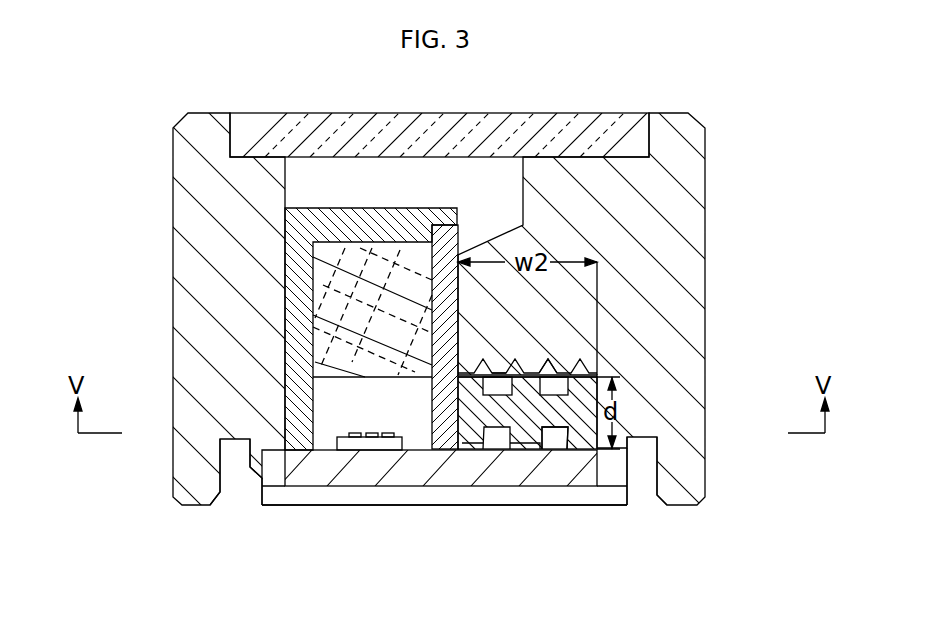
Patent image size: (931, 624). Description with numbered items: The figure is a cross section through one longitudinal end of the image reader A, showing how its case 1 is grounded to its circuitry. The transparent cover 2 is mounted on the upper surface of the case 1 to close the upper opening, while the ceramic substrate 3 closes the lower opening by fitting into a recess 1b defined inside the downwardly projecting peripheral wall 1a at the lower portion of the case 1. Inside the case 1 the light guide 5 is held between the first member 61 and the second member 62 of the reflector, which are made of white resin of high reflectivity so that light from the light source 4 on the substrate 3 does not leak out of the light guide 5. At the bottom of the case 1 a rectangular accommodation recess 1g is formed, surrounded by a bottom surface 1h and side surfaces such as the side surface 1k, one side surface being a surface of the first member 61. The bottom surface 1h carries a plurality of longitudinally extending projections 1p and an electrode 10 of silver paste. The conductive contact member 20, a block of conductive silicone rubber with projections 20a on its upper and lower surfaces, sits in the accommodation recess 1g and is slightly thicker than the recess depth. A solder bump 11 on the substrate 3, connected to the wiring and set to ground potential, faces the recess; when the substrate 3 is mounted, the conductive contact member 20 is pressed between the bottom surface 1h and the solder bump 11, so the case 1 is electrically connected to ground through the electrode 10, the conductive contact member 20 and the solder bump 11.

The case 1 is at (690, 246).
The transparent cover 2 is at (286, 130).
The substrate 3 is at (307, 468).
The light source 4 is at (353, 452).
The light guide 5 is at (398, 362).
The first member 61 is at (450, 452).
The second member 62 is at (300, 290).
The electrode 10 is at (530, 372).
The solder bump 11 is at (548, 442).
The conductive contact member 20 is at (600, 432).
The projections 20a is at (553, 432).
The peripheral wall 1a is at (283, 462).
The recess 1b is at (430, 450).
The accommodation recess 1g is at (512, 450).
The bottom surface 1h is at (550, 366).
The side surface 1k is at (583, 399).
The projections 1p is at (503, 370).
The image reader A is at (586, 99).